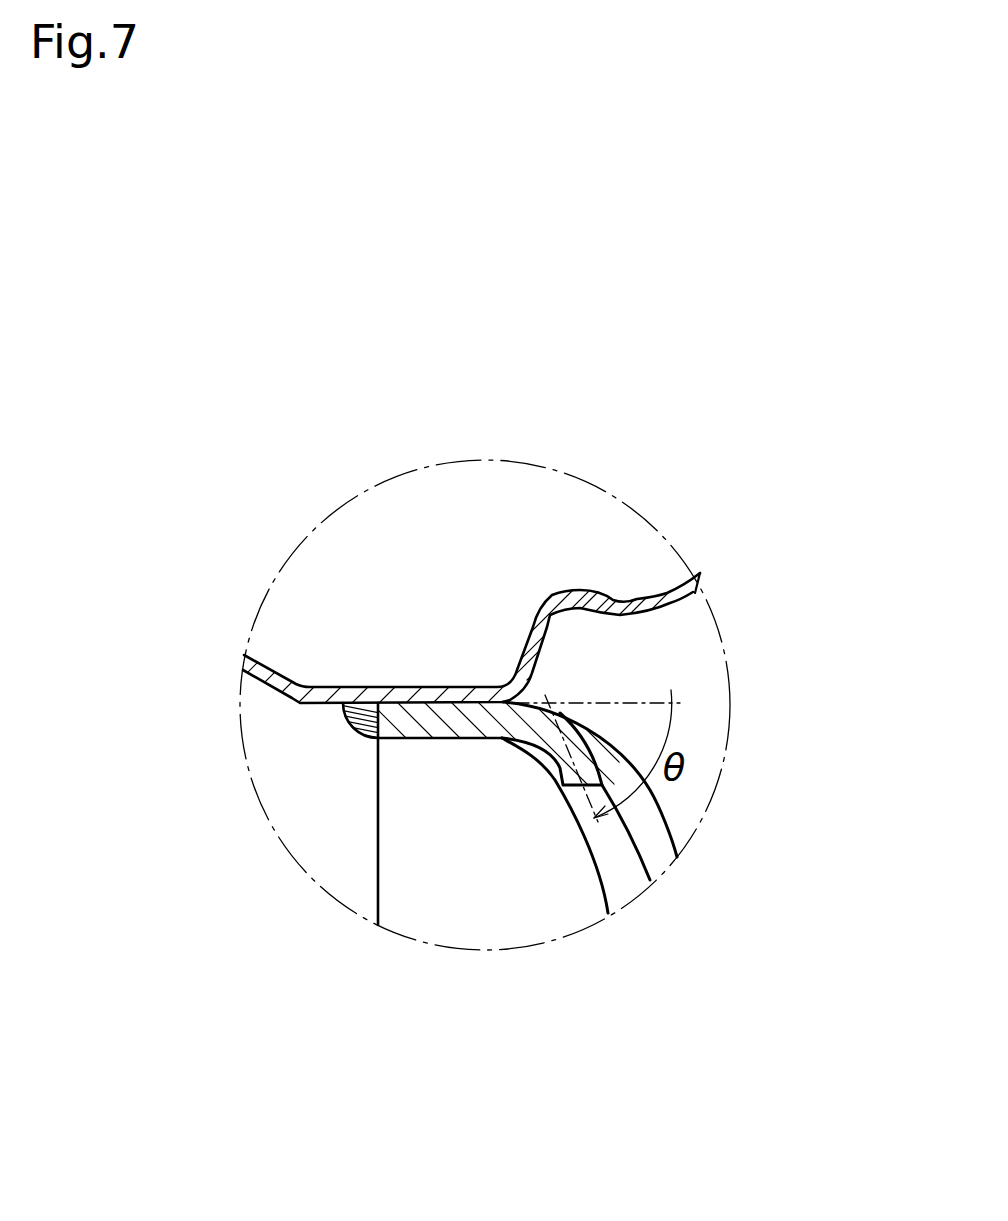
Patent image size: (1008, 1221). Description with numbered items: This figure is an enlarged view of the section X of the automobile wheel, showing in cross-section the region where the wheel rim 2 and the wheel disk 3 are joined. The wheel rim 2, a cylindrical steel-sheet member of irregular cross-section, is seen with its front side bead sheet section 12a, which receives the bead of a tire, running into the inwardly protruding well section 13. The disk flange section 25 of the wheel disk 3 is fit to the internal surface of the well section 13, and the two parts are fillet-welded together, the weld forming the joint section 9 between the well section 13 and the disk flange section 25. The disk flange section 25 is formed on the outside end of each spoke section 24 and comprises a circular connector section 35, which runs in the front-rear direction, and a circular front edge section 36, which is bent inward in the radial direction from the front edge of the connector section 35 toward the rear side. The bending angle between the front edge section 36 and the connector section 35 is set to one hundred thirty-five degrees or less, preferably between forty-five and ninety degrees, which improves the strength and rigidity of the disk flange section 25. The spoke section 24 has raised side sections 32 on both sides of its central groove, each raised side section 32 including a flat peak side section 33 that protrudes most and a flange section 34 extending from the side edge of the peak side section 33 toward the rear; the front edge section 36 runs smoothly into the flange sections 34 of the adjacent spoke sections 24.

The section X is at (582, 475).
The wheel rim 2 is at (469, 613).
The front side bead sheet section 12a is at (642, 602).
The well section 13 is at (415, 697).
The wheel disk 3 is at (571, 880).
The joint section 9 is at (353, 722).
The disk flange section 25 is at (393, 787).
The connector section 35 is at (448, 720).
The front edge section 36 is at (563, 783).
The spoke section 24 is at (660, 870).
The raised side section 32 is at (662, 838).
The peak side section 33 is at (665, 822).
The flange section 34 is at (657, 865).